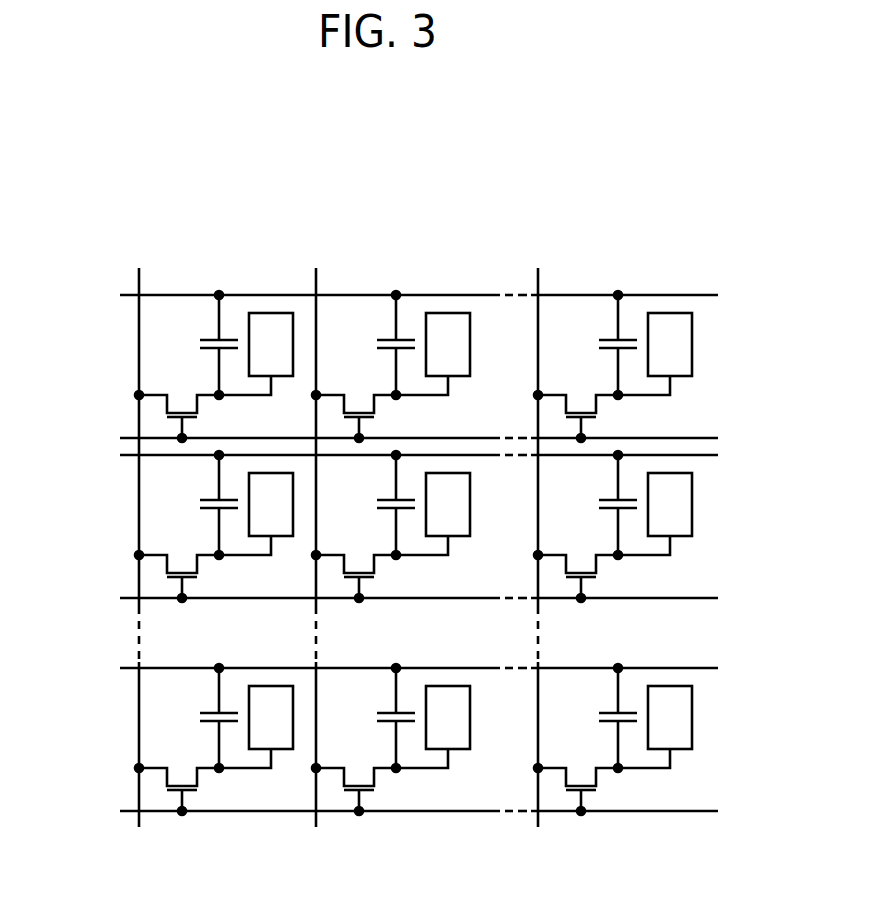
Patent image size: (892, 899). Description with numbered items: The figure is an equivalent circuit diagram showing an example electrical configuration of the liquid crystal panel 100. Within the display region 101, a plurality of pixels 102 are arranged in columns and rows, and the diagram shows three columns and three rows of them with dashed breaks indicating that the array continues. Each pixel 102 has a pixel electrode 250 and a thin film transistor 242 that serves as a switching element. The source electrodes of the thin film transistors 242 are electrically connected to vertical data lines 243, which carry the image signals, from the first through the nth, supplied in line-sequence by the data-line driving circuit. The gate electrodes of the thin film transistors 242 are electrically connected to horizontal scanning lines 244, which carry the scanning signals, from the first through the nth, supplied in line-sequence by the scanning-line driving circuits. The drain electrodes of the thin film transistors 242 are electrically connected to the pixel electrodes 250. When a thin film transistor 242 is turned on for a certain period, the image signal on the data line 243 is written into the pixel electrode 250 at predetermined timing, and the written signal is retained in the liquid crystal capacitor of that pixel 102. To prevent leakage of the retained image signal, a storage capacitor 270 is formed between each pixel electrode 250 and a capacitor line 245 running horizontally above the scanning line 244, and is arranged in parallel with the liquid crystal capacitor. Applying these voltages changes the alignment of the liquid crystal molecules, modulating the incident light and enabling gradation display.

The liquid crystal panel 100 is at (546, 180).
The display region 101 is at (450, 255).
The pixel 102 is at (155, 350).
The thin film transistor 242 is at (208, 415).
The data line 243 is at (143, 286).
The scanning line 244 is at (137, 437).
The capacitor line 245 is at (135, 292).
The pixel electrode 250 is at (271, 312).
The storage capacitor 270 is at (197, 347).